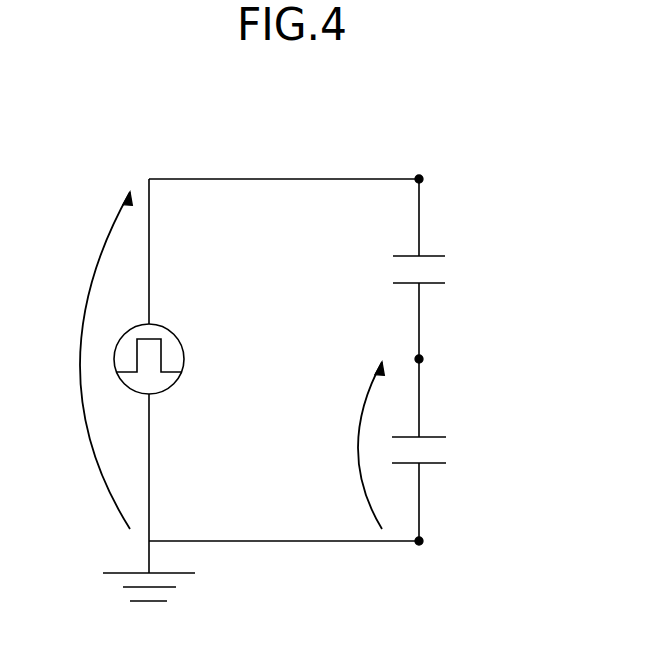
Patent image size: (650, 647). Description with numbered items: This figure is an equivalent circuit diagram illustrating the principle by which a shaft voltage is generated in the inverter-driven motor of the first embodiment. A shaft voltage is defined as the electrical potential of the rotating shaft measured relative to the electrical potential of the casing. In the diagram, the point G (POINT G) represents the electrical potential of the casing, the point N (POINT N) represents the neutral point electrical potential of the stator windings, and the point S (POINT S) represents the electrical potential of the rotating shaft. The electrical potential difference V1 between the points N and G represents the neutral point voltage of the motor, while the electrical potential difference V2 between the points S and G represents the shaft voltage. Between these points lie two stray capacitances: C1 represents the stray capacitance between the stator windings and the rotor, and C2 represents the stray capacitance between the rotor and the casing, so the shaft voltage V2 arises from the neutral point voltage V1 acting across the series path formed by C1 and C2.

The stray capacitance between the stator windings and the rotor C1 is at (434, 270).
The stray capacitance between the rotor and the casing C2 is at (434, 451).
The neutral point voltage V1 is at (89, 360).
The shaft voltage V2 is at (355, 445).
The point N POINT N is at (421, 175).
The point S POINT S is at (423, 359).
The point G POINT G is at (421, 545).